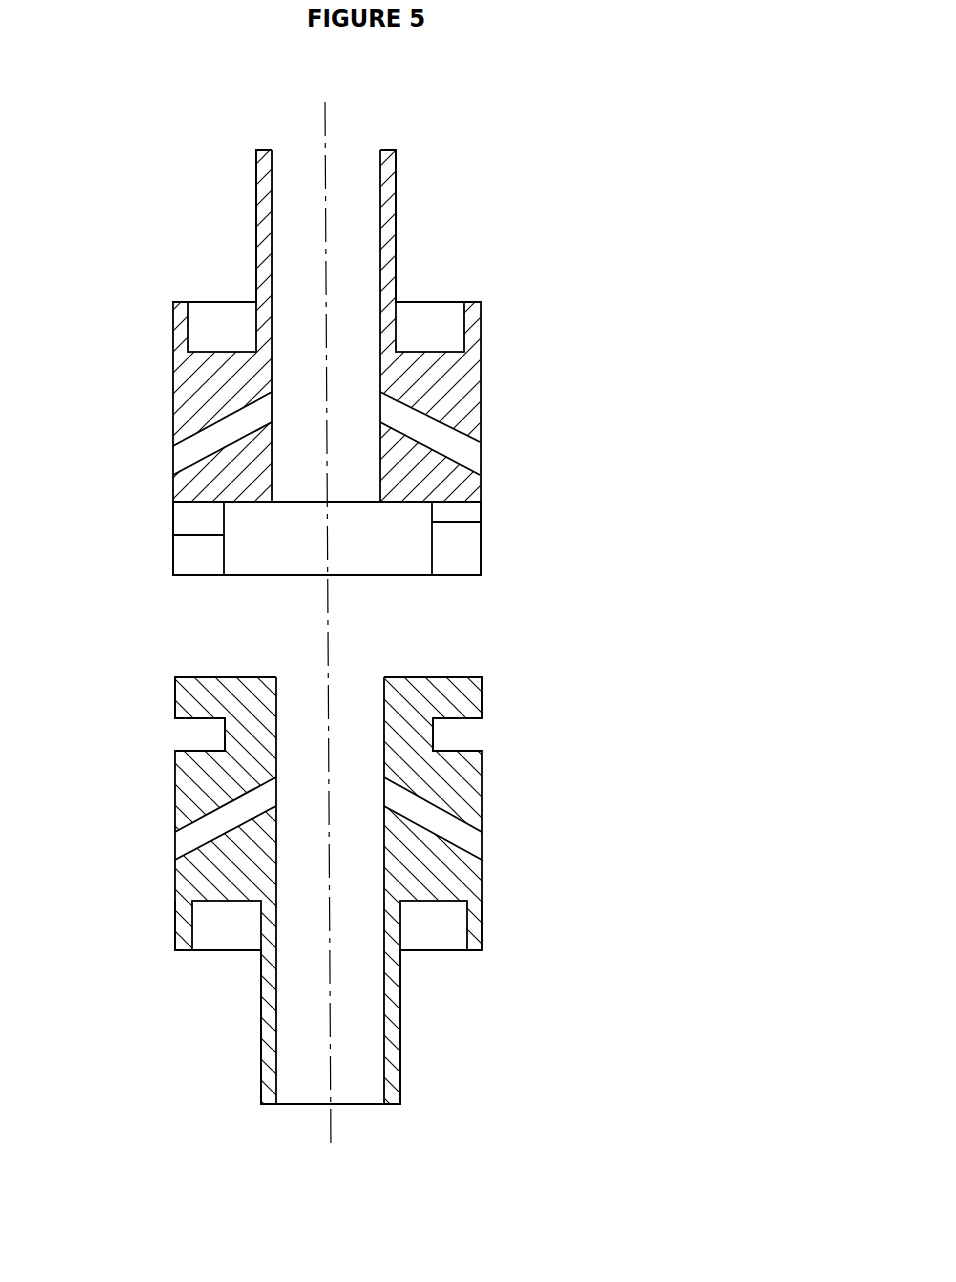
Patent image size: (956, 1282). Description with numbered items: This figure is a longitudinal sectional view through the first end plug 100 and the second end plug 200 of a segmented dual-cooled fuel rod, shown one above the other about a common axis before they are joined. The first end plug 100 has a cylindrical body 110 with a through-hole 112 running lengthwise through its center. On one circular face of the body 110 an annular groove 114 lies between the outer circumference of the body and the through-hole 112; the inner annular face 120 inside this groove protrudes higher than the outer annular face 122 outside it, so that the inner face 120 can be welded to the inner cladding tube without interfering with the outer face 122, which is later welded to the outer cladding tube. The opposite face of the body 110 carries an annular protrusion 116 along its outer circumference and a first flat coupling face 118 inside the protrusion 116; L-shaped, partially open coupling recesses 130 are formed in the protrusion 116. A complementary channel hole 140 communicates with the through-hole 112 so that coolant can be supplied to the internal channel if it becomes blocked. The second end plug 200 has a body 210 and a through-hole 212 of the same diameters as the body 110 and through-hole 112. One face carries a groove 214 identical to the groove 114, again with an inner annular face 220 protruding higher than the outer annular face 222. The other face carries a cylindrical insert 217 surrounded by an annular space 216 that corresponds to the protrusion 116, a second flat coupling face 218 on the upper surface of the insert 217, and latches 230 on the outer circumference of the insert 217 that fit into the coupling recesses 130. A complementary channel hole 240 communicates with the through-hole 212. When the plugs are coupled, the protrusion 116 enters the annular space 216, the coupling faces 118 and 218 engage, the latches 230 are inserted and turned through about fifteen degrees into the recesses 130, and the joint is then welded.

The first end plug 100 is at (507, 173).
The body 110 is at (467, 380).
The through-hole 112 is at (348, 163).
The annular groove 114 is at (236, 312).
The annular protrusion 116 is at (472, 557).
The first flat coupling face 118 is at (421, 503).
The inner annular face 120 is at (262, 153).
The outer annular face 122 is at (182, 303).
The coupling recess 130 is at (193, 555).
The complementary channel hole 140 is at (465, 456).
The second end plug 200 is at (585, 653).
The body 210 is at (477, 812).
The through-hole 212 is at (344, 687).
The groove 214 is at (434, 940).
The annular space 216 is at (464, 724).
The cylindrical insert 217 is at (237, 732).
The second flat coupling face 218 is at (443, 677).
The inner annular face 220 is at (266, 1104).
The outer annular face 222 is at (482, 952).
The latch 230 is at (482, 690).
The complementary channel hole 240 is at (470, 840).